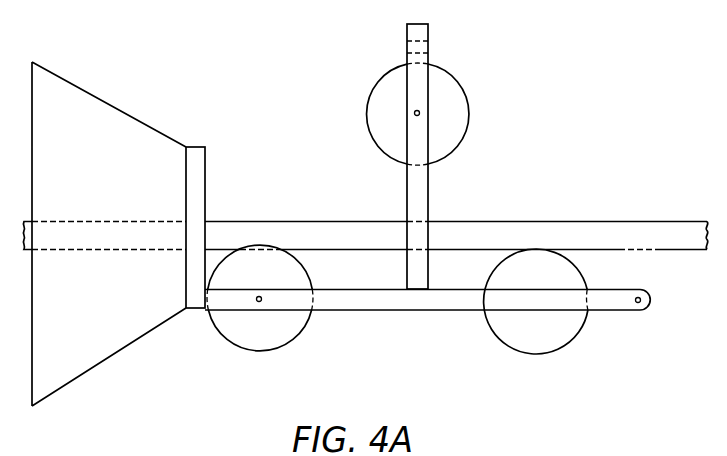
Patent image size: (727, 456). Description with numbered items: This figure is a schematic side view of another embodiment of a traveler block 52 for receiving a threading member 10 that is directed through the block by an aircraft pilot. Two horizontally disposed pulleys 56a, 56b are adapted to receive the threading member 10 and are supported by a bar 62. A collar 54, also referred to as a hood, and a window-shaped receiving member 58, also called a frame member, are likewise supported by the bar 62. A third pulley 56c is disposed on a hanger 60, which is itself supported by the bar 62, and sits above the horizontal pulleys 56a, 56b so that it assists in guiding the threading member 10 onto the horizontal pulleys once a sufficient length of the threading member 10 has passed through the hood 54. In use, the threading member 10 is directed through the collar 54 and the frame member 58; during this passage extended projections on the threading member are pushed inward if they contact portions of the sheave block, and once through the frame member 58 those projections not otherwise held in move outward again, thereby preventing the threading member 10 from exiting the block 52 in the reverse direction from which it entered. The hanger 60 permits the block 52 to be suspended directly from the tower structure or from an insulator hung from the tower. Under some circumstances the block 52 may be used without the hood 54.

The threading member 10 is at (288, 180).
The traveler block 52 is at (575, 185).
The collar 54 is at (110, 184).
The horizontally disposed pulley 56a is at (266, 350).
The horizontally disposed pulley 56b is at (653, 348).
The third pulley 56c is at (464, 91).
The window-shaped receiving member 58 is at (192, 143).
The hanger 60 is at (429, 60).
The bar 62 is at (397, 306).